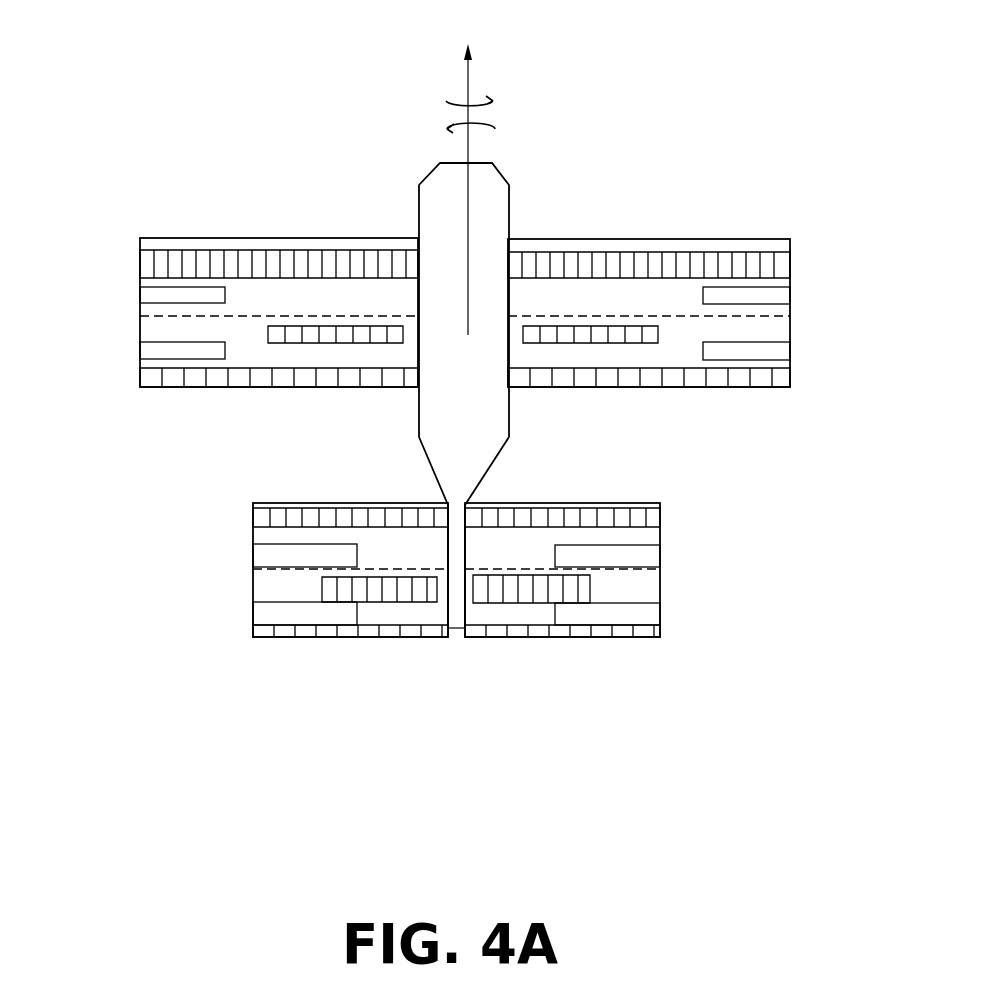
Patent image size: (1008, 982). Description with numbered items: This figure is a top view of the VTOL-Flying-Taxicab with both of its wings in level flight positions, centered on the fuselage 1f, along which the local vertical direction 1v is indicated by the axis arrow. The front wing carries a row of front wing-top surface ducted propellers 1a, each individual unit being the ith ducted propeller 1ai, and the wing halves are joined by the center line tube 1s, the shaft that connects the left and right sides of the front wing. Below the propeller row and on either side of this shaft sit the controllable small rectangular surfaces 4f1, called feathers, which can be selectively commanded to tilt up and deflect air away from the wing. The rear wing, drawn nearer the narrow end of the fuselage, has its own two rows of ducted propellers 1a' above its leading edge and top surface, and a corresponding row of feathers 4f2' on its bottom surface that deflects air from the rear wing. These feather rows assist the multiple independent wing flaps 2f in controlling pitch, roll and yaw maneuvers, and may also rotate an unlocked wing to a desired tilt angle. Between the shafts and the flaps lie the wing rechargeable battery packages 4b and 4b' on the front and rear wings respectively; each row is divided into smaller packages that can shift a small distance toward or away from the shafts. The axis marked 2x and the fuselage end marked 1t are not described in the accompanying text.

The local vertical direction 1v is at (471, 177).
The fuselage 1f is at (471, 360).
The front wing-top surface ducted propellers 1a is at (444, 286).
The ith ducted propeller 1ai is at (213, 260).
The center line tube 1s is at (352, 316).
The controllable small rectangular surfaces (feathers) on top surface of the first w 4f1 is at (140, 293).
The controllable small rectangular surfaces (feathers) on bottom surface of wing 1w' 4f2' is at (459, 590).
The multiple independent wing flaps 2f is at (210, 388).
The wing rechargeable battery package 4b is at (481, 386).
The wing rechargeable battery package 4b' is at (438, 523).
The ducted propellers above leading edge of rear wing 1a' is at (451, 557).
The transverse axis 2x is at (515, 502).
The shaft tip 1t is at (457, 629).